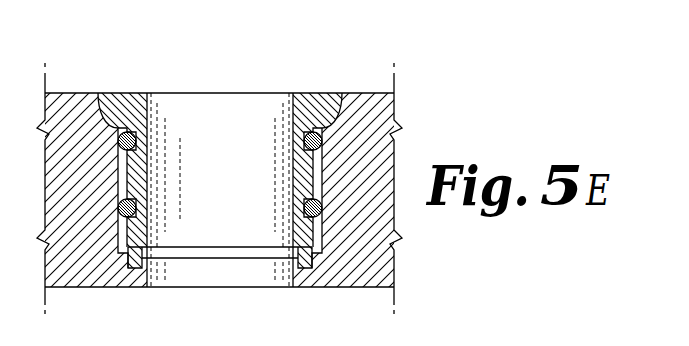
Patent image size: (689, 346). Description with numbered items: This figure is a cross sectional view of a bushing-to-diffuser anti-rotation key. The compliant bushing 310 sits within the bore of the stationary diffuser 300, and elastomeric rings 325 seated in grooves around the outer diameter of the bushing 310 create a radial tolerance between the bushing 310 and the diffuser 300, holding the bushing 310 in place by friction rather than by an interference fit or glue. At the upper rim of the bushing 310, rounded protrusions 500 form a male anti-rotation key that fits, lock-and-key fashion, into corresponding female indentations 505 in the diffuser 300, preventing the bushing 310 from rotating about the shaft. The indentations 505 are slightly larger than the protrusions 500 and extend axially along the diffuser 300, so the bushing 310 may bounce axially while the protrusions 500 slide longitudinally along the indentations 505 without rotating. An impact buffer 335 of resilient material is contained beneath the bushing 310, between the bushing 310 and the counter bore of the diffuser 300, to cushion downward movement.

The diffuser 300 is at (70, 248).
The bushing 310 is at (185, 72).
The rounded protrusions 500 is at (316, 107).
The female indentations 505 is at (336, 122).
The elastomeric rings 325 is at (314, 210).
The impact buffer 335 is at (301, 270).